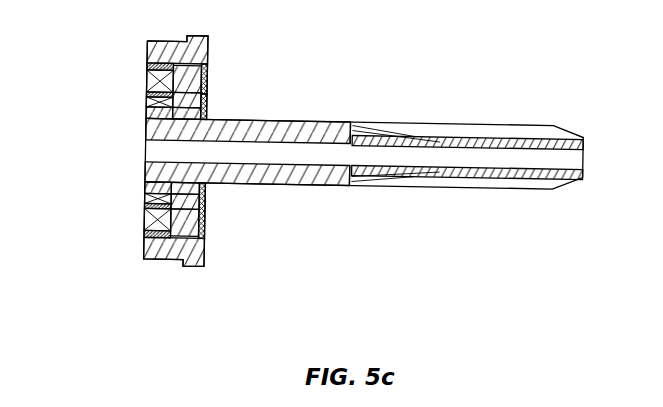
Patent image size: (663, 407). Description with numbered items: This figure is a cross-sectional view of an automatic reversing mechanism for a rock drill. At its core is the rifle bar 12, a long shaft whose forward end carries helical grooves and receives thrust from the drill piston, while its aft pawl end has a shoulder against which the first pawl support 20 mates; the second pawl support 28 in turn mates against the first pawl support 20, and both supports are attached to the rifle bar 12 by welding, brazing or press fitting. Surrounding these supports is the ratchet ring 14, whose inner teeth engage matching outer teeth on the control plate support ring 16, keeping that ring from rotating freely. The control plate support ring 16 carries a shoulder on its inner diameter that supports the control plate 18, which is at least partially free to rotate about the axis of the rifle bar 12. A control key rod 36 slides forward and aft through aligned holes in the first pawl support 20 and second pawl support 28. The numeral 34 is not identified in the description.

The rifle bar 12 is at (352, 127).
The ratchet ring 14 is at (153, 259).
The control plate support ring 16 is at (202, 232).
The control plate 18 is at (208, 72).
The first pawl support 20 is at (143, 220).
The second pawl support 28 is at (208, 100).
The upper bearing 34 is at (152, 83).
The control key rod 36 is at (148, 97).